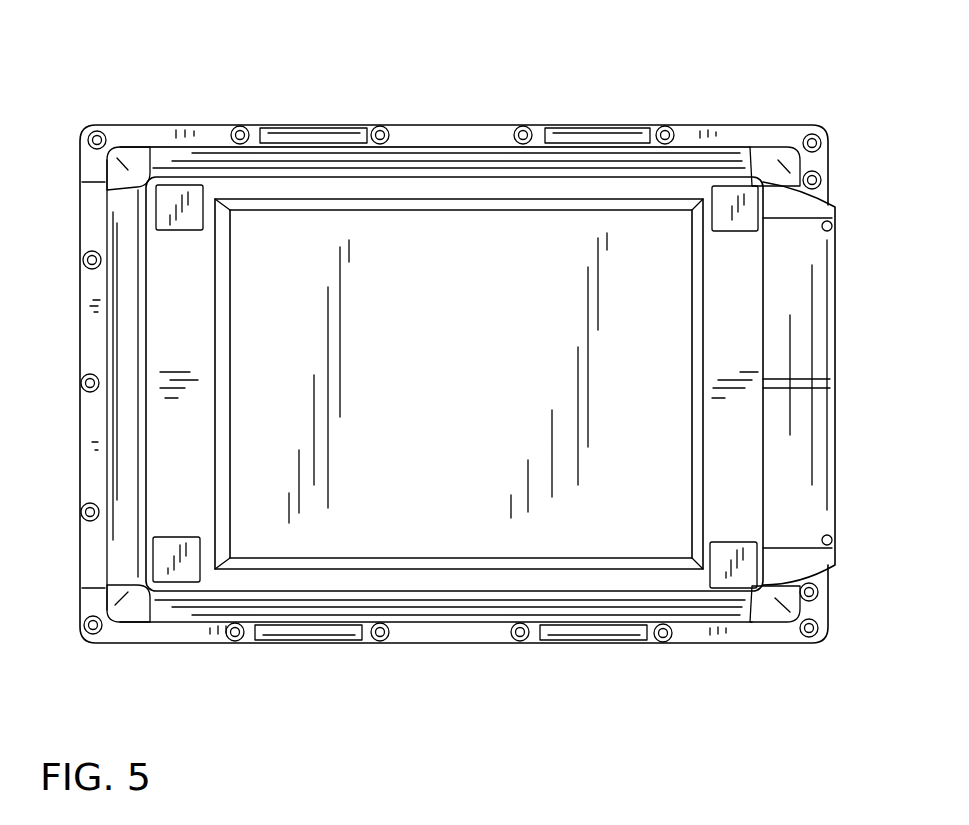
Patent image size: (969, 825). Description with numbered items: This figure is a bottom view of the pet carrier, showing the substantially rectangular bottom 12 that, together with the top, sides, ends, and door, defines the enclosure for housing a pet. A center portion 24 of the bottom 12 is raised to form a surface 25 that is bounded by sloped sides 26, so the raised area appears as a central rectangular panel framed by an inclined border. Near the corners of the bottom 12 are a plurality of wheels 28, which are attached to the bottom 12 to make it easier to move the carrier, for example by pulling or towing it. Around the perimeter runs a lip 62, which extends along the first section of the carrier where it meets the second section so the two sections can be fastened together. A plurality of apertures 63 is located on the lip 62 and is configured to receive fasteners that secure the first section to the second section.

The bottom 12 is at (394, 186).
The center portion 24 is at (655, 372).
The surface 25 is at (448, 378).
The sloped sides 26 is at (695, 283).
The wheels 28 is at (168, 210).
The lip 62 is at (111, 125).
The apertures 63 is at (243, 126).